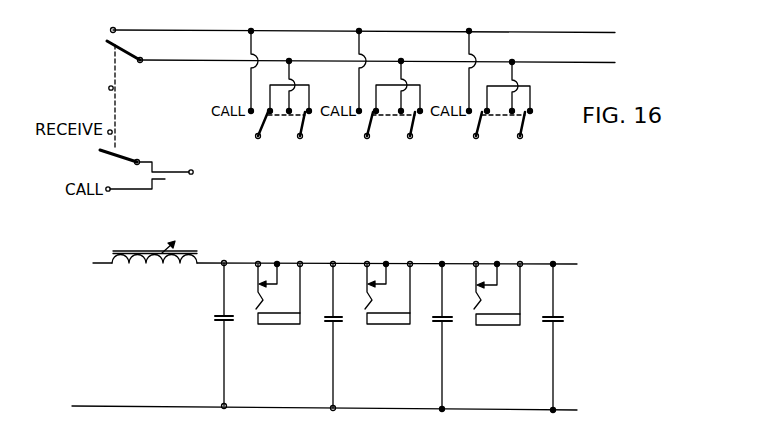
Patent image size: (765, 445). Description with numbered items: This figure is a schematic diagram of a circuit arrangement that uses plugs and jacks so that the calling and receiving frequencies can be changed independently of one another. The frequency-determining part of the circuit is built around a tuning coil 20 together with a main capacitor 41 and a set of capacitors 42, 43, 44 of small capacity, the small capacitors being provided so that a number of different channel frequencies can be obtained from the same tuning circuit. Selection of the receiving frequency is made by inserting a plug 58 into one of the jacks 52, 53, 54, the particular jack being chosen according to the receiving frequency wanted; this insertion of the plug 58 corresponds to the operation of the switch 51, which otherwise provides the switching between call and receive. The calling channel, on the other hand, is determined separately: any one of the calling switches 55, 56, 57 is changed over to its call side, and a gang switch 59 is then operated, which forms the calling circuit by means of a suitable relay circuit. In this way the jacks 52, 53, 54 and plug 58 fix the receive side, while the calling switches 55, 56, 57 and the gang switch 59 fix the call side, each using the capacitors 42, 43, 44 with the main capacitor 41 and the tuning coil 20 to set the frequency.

The tuning coil 20 is at (155, 260).
The main capacitor 41 is at (218, 326).
The capacitor 42 is at (327, 323).
The capacitor 43 is at (438, 323).
The capacitor 44 is at (548, 323).
The switch 51 is at (102, 152).
The jack 52 is at (277, 320).
The jack 53 is at (385, 320).
The jack 54 is at (492, 323).
The calling switch 55 is at (288, 118).
The calling switch 56 is at (398, 118).
The calling switch 57 is at (503, 118).
The plug 58 is at (180, 170).
The gang switch 59 is at (114, 48).